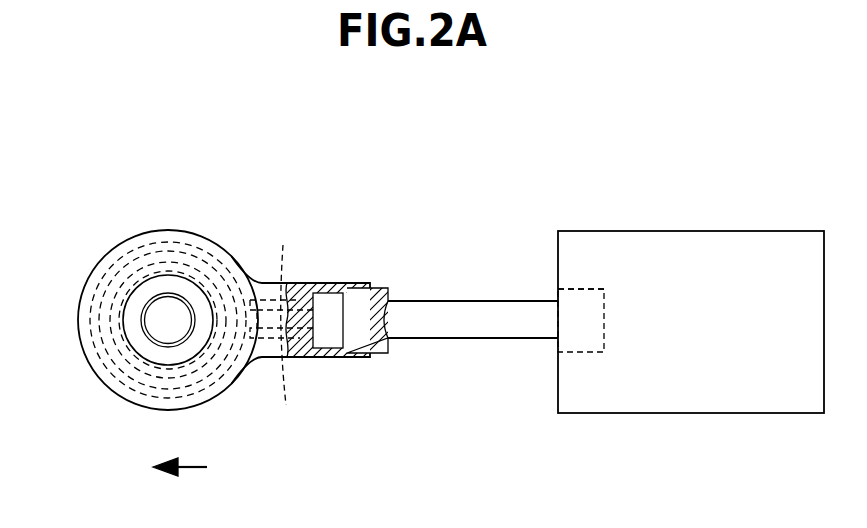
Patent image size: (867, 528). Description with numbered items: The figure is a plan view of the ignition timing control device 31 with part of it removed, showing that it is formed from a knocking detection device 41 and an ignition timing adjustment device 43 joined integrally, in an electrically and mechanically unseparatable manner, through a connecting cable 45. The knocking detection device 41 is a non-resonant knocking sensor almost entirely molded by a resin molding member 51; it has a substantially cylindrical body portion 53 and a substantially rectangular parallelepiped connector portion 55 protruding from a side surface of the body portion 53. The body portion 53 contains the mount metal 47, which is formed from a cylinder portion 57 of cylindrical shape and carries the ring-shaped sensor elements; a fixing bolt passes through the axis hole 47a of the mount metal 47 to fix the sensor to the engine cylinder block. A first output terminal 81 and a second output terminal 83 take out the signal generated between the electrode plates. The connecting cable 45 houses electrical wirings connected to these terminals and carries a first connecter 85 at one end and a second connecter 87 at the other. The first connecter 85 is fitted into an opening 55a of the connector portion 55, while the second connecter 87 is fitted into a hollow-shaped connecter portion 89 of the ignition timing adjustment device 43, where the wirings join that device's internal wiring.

The ignition timing control device 31 is at (540, 153).
The knocking detection device 41 is at (303, 156).
The ignition timing adjustment device 43 is at (700, 170).
The connecting cable 45 is at (458, 280).
The mount metal 47 is at (133, 336).
The axis hole 47a is at (167, 299).
The resin molding member 51 is at (208, 243).
The body portion 53 is at (200, 181).
The connector portion 55 is at (320, 284).
The opening 55a is at (378, 297).
The cylinder portion 57 is at (200, 336).
The first output terminal 81 is at (286, 338).
The second output terminal 83 is at (290, 283).
The first connecter 85 is at (363, 335).
The second connecter 87 is at (580, 343).
The connecter portion 89 is at (583, 289).